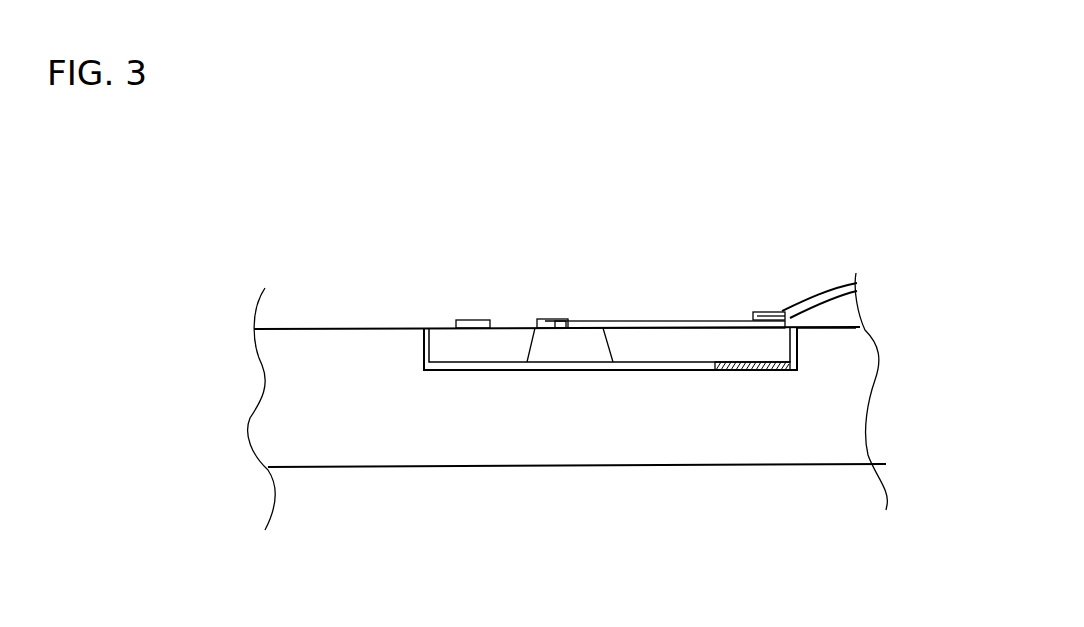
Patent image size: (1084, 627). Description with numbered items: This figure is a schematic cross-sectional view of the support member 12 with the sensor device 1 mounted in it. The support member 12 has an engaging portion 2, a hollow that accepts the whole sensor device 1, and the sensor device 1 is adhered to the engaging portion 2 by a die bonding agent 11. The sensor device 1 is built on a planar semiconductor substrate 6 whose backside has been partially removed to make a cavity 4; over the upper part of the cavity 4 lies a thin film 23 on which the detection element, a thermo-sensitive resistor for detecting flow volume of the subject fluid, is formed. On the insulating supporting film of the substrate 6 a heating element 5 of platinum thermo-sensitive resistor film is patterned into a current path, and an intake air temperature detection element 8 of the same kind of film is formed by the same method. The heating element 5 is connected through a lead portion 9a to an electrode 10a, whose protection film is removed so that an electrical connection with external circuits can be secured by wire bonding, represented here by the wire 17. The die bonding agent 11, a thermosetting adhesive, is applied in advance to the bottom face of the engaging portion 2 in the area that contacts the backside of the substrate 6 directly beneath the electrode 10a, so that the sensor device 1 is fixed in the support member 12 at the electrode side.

The sensor device 1 is at (447, 355).
The engaging portion 2 is at (803, 338).
The cavity 4 is at (548, 348).
The heating element 5 is at (575, 320).
The planar semiconductor substrate 6 is at (487, 345).
The intake air temperature detection element 8 is at (470, 320).
The lead portion 9a is at (650, 321).
The electrode 10a is at (753, 312).
The die bonding agent 11 is at (753, 367).
The support member 12 is at (633, 430).
The wiring 17 is at (815, 298).
The thin film 23 is at (545, 320).